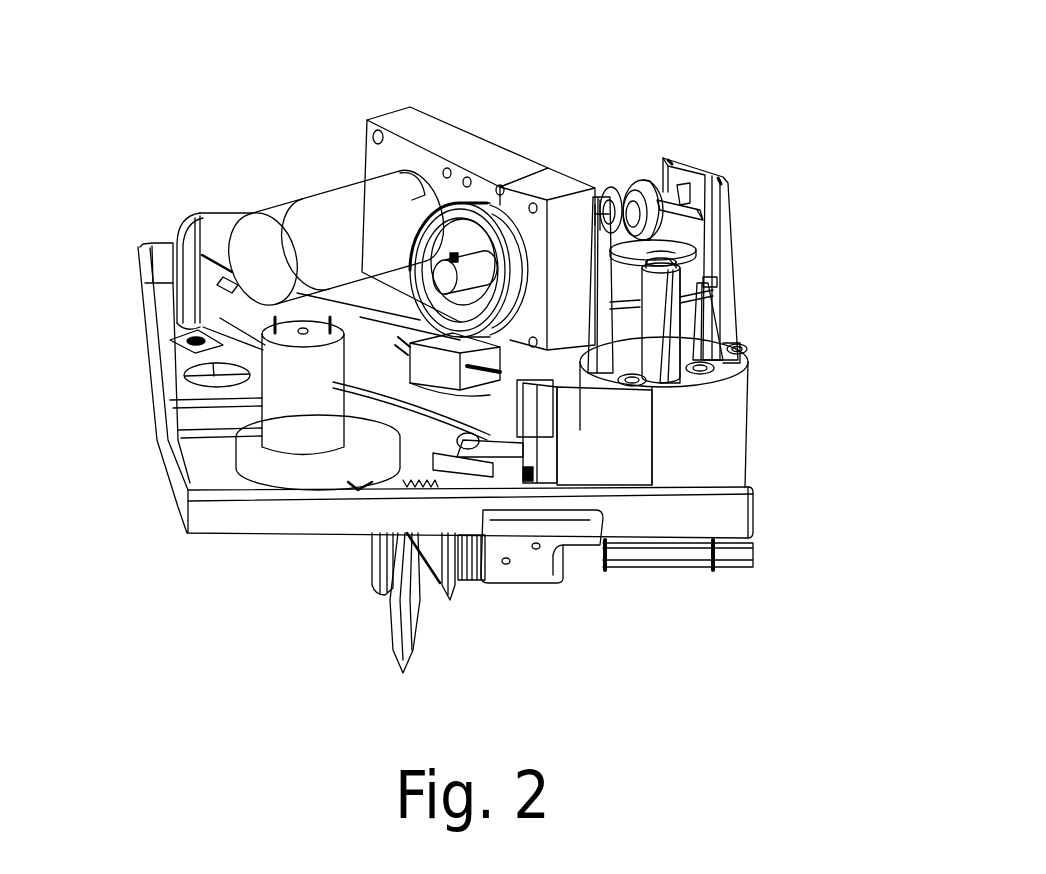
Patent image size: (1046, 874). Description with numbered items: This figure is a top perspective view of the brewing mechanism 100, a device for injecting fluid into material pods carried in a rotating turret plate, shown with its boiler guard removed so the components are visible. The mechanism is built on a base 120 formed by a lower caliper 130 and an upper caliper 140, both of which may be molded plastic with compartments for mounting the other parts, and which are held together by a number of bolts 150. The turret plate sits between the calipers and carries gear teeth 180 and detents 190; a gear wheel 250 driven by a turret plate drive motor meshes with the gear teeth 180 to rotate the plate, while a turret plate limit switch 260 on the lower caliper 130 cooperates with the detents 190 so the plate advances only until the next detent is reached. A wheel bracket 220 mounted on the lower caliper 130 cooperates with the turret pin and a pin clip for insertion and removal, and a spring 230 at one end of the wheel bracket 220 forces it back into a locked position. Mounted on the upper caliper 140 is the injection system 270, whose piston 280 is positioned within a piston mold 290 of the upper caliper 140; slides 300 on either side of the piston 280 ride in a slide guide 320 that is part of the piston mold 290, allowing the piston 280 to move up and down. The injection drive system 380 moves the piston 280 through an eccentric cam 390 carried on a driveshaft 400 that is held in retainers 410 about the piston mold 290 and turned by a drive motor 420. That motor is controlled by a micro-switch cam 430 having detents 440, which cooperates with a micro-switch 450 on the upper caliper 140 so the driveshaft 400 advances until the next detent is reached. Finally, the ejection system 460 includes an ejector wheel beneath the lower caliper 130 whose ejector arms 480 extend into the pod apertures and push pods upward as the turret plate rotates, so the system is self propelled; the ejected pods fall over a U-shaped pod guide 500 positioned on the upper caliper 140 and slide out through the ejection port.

The brewing mechanism 100 is at (200, 70).
The base 120 is at (147, 455).
The lower caliper 130 is at (757, 520).
The upper caliper 140 is at (745, 447).
The bolts 150 is at (743, 350).
The gear teeth 180 is at (415, 478).
The detents 190 is at (510, 437).
The wheel bracket 220 is at (450, 600).
The spring 230 is at (483, 563).
The gear wheel 250 is at (375, 483).
The turret plate limit switch 260 is at (552, 446).
The injection system 270 is at (643, 170).
The piston 280 is at (693, 224).
The piston mold 290 is at (713, 282).
The slides 300 is at (672, 255).
The slide guide 320 is at (661, 297).
The injection drive system 380 is at (365, 109).
The eccentric cam 390 is at (622, 188).
The driveshaft 400 is at (464, 262).
The retainers 410 is at (698, 165).
The drive motor 420 is at (452, 130).
The micro-switch cam 430 is at (517, 258).
The detents 440 is at (490, 203).
The micro-switch 450 is at (437, 370).
The ejection system 460 is at (193, 202).
The ejector arms 480 is at (395, 657).
The pod guide 500 is at (185, 215).